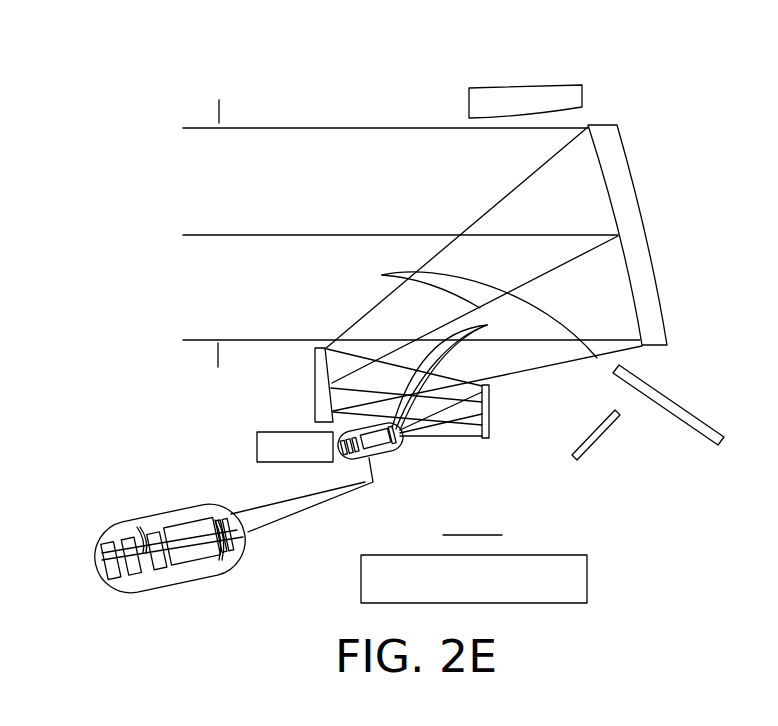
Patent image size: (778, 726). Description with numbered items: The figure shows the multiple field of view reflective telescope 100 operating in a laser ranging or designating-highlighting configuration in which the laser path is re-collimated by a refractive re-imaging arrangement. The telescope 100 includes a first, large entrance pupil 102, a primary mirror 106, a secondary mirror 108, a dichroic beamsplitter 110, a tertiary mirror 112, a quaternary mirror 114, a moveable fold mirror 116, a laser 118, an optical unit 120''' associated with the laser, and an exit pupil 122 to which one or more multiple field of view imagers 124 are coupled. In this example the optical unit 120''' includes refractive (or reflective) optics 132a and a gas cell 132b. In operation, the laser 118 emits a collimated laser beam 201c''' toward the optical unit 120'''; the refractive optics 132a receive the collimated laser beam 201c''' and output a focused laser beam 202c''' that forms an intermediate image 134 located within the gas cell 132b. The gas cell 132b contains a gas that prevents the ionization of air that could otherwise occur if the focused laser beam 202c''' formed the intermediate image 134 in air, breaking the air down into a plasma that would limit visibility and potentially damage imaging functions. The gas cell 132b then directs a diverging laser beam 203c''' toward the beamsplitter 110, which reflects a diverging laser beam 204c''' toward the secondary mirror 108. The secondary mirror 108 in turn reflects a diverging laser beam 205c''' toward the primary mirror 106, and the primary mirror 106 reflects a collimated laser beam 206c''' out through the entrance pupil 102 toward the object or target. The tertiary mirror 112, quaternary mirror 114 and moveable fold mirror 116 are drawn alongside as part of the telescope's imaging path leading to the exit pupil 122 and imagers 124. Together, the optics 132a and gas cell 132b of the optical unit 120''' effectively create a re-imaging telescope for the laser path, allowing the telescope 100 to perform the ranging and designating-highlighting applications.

The multiple field of view reflective telescope 100 is at (688, 62).
The first entrance pupil 102 is at (217, 354).
The primary mirror 106 is at (645, 232).
The secondary mirror 108 is at (316, 383).
The beamsplitter 110 is at (490, 400).
The tertiary mirror 112 is at (598, 438).
The quaternary mirror 114 is at (515, 85).
The moveable fold mirror 116 is at (675, 400).
The laser 118 is at (257, 447).
The optical unit 120''' is at (162, 526).
The exit pupil 122 is at (502, 535).
The multiple field of view imagers 124 is at (588, 578).
The refractive optics 132a is at (110, 545).
The gas cell 132b is at (176, 572).
The intermediate image 134 is at (190, 509).
The collimated laser beam 201c''' is at (336, 458).
The focused laser beam 202c''' is at (105, 518).
The diverging laser beam 203c''' is at (252, 561).
The diverging laser beam 204c''' is at (474, 368).
The diverging laser beam 205c''' is at (453, 308).
The collimated laser beam 206c''' is at (398, 234).